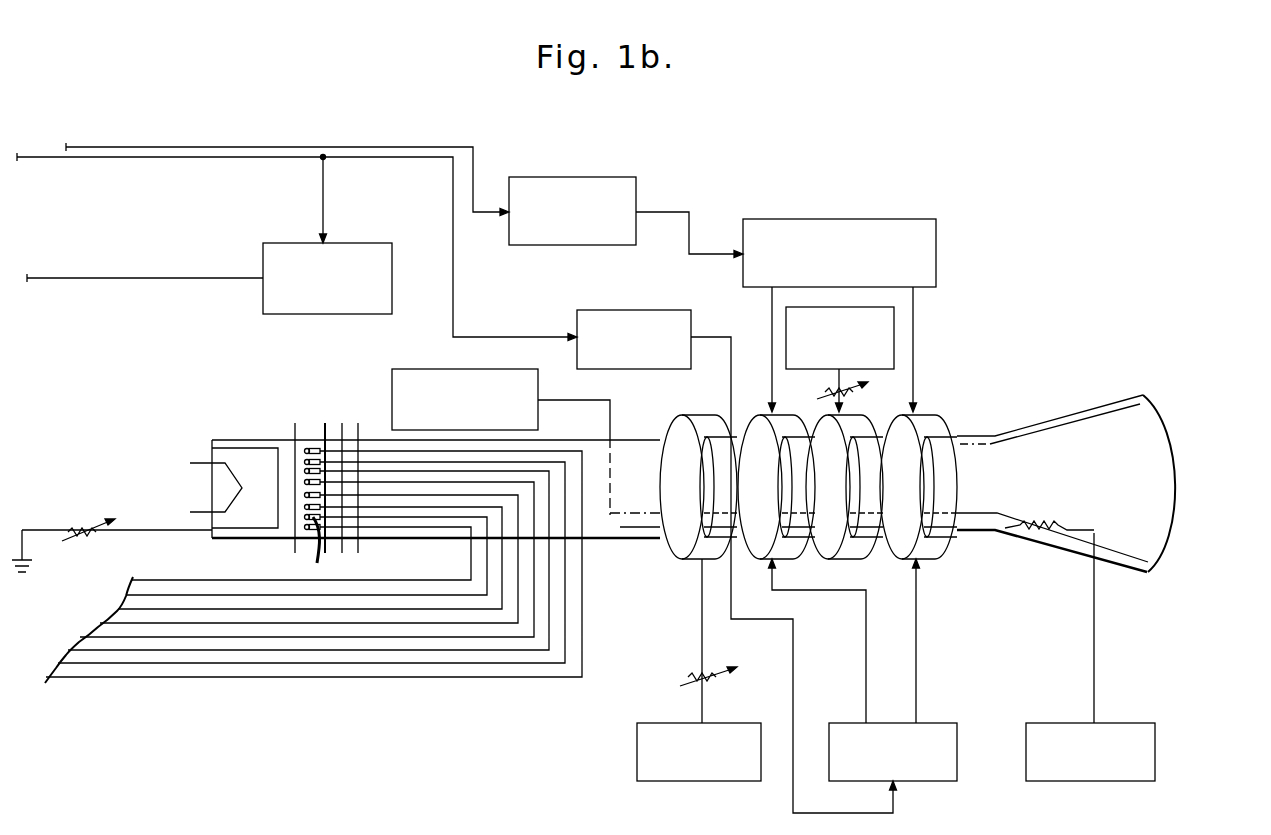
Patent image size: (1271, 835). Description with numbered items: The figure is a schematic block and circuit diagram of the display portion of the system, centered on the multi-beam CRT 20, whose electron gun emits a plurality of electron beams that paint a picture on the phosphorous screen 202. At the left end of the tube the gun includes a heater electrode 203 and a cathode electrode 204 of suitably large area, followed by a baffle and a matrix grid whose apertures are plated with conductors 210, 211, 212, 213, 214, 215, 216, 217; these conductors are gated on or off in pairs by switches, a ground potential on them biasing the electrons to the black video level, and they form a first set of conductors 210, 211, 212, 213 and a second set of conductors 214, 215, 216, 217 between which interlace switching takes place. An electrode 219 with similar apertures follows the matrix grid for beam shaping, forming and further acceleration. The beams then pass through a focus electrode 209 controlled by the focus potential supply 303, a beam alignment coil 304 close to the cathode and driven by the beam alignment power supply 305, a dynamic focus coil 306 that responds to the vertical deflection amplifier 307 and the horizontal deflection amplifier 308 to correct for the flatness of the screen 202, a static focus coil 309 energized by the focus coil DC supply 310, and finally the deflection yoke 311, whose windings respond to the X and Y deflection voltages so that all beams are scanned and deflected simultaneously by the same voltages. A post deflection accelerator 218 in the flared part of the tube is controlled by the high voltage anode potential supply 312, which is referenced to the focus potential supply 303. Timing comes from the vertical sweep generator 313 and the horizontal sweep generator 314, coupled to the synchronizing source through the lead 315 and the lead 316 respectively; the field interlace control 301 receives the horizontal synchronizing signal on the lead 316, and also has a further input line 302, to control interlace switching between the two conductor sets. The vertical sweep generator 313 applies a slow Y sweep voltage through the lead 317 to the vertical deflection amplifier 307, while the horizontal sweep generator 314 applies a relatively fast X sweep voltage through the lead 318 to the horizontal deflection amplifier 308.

The multi-beam CRT 20 is at (1085, 415).
The phosphorous screen 202 is at (1178, 490).
The heater electrode 203 is at (202, 463).
The cathode electrode 204 is at (263, 448).
The focus electrode 209 is at (616, 446).
The conductor 210 is at (304, 530).
The conductor 211 is at (305, 507).
The conductor 212 is at (306, 483).
The conductor 213 is at (305, 462).
The conductor 214 is at (334, 546).
The conductor 215 is at (305, 495).
The conductor 216 is at (303, 470).
The conductor 217 is at (313, 450).
The post deflection accelerator 218 is at (1065, 520).
The electrode 219 is at (360, 548).
The field interlace control 301 is at (277, 313).
The interlace control input line 302 is at (152, 278).
The focus potential supply 303 is at (427, 368).
The beam alignment coil 304 is at (693, 416).
The beam alignment power supply 305 is at (672, 780).
The dynamic focus coil 306 is at (754, 420).
The vertical deflection amplifier 307 is at (933, 221).
The horizontal deflection amplifier 308 is at (948, 722).
The static focus coil 309 is at (820, 430).
The focus coil DC supply 310 is at (893, 345).
The deflection yoke 311 is at (928, 415).
The high voltage anode potential supply 312 is at (1148, 722).
The vertical sweep generator 313 is at (630, 179).
The horizontal sweep generator 314 is at (577, 313).
The lead 315 is at (135, 147).
The lead 316 is at (172, 158).
The lead 317 is at (691, 212).
The lead 318 is at (723, 334).